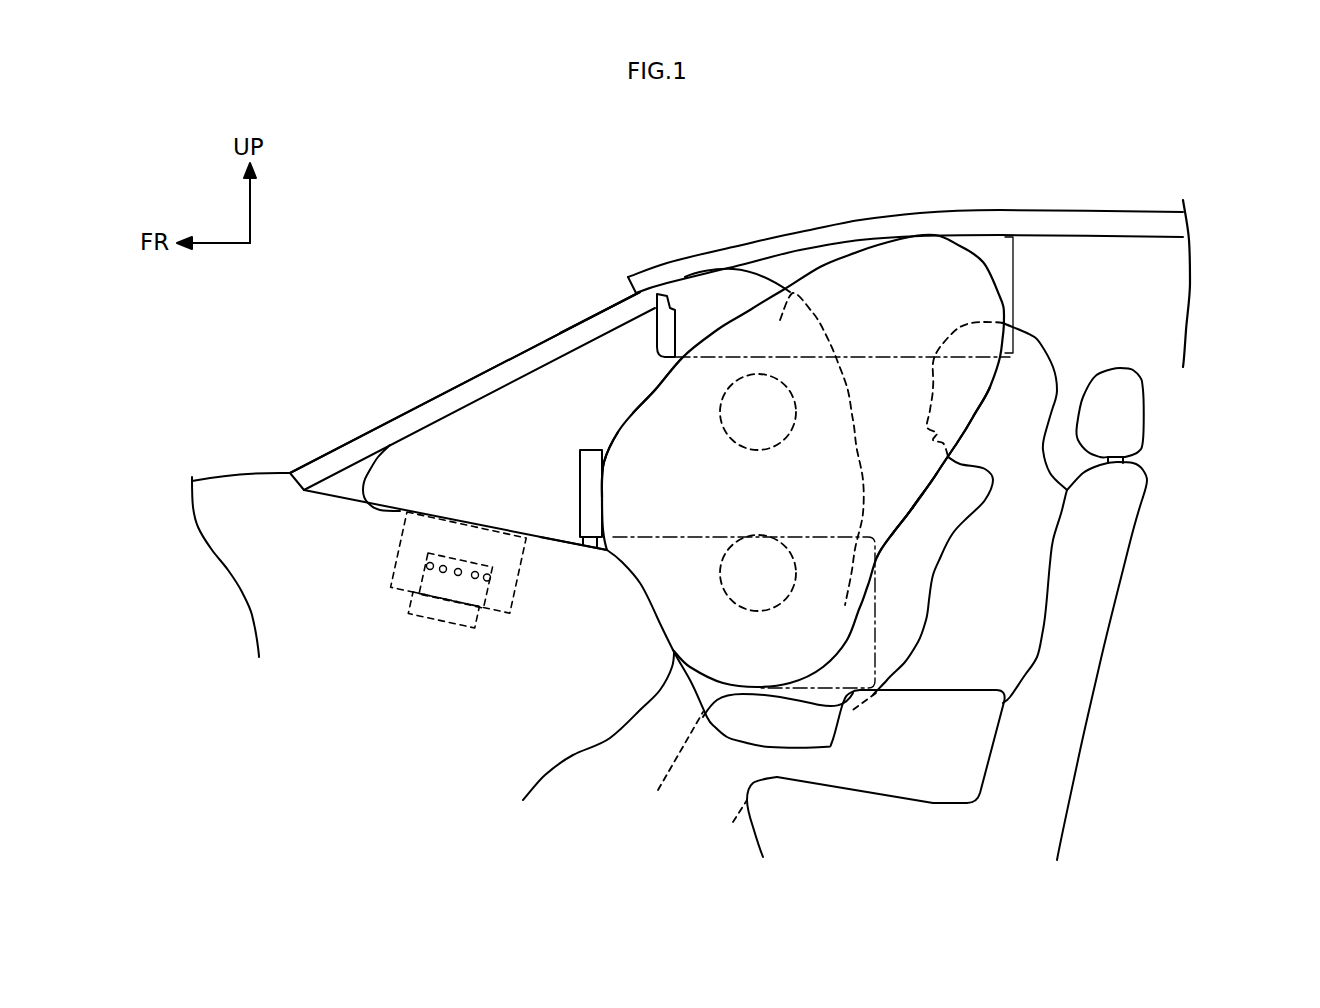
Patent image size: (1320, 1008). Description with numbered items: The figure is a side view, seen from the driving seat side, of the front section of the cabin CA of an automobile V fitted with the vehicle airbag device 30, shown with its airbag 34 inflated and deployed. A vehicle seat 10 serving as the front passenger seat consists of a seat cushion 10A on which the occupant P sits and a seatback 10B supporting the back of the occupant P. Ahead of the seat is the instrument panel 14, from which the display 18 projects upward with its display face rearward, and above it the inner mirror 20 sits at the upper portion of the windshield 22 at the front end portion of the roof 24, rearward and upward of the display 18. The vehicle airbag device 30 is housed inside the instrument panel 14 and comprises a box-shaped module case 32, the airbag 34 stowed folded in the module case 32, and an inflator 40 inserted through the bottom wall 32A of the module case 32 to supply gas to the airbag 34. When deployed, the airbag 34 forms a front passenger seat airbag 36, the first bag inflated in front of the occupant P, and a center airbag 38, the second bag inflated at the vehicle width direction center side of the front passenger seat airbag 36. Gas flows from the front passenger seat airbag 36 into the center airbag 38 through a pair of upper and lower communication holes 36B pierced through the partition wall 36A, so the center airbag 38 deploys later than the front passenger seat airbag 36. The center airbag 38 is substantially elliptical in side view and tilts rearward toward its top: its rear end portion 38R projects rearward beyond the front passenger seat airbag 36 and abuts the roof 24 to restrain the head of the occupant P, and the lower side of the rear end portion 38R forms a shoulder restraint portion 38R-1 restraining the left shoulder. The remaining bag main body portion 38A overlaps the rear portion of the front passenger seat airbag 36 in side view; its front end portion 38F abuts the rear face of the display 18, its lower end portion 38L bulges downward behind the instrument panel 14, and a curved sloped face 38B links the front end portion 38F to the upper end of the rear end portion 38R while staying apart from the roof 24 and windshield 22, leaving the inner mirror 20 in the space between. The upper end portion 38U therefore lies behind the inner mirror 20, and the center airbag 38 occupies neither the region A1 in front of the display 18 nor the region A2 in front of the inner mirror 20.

The vehicle seat 10 is at (941, 617).
The seat cushion 10A is at (767, 825).
The seatback 10B is at (1090, 637).
The instrument panel 14 is at (571, 753).
The display 18 is at (575, 515).
The inner mirror 20 is at (678, 325).
The windshield 22 is at (470, 379).
The roof 24 is at (888, 211).
The vehicle airbag device 30 is at (397, 607).
The module case 32 is at (397, 573).
The bottom wall 32A is at (402, 592).
The airbag 34 is at (690, 423).
The front passenger seat airbag 36 is at (398, 460).
The partition wall 36A is at (793, 293).
The communication holes 36B is at (748, 452).
The center airbag 38 is at (983, 257).
The bag main body portion 38A is at (643, 433).
The sloped face 38B is at (733, 318).
The front end portion 38F is at (617, 520).
The lower end portion 38L is at (875, 612).
The rear end portion 38R is at (933, 257).
The shoulder restraint portion 38R-1 is at (907, 506).
The upper end portion 38U is at (1013, 295).
The inflator 40 is at (457, 627).
The occupant P is at (937, 567).
The cabin CA is at (1147, 293).
The automobile V is at (582, 214).
The region facing the front side of the display A1 is at (557, 490).
The region facing the front side of the inner mirror A2 is at (640, 333).